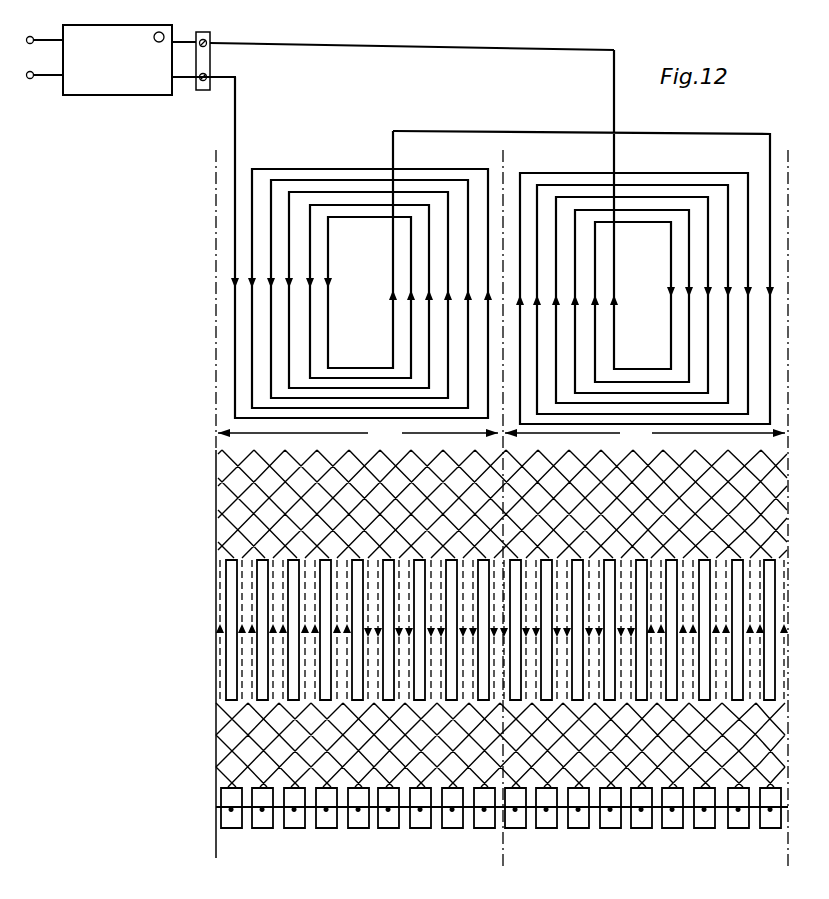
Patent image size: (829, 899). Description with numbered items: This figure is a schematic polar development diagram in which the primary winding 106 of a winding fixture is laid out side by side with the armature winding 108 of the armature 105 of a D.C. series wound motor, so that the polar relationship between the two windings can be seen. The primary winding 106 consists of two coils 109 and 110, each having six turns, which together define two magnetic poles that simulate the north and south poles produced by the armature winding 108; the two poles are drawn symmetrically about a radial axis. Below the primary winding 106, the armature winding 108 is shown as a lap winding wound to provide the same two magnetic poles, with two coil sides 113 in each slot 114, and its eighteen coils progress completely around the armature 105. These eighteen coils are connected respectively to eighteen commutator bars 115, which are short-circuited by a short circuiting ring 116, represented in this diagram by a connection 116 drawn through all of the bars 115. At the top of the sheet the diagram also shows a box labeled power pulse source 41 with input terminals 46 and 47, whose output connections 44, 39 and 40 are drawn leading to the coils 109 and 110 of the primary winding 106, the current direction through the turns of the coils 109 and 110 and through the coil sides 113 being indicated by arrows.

The output terminal 39 is at (212, 39).
The output terminal 40 is at (202, 92).
The power pulse source 41 is at (97, 96).
The control input 44 is at (164, 34).
The input terminal 46 is at (28, 37).
The input terminal 47 is at (29, 79).
The armature 105 is at (439, 657).
The primary winding 106 is at (228, 320).
The armature winding 108 is at (250, 517).
The coil 109 is at (310, 167).
The coil 110 is at (673, 172).
The coil sides 113 is at (245, 688).
The slot 114 is at (222, 661).
The commutator bars 115 is at (358, 830).
The short circuiting ring 116 is at (575, 815).